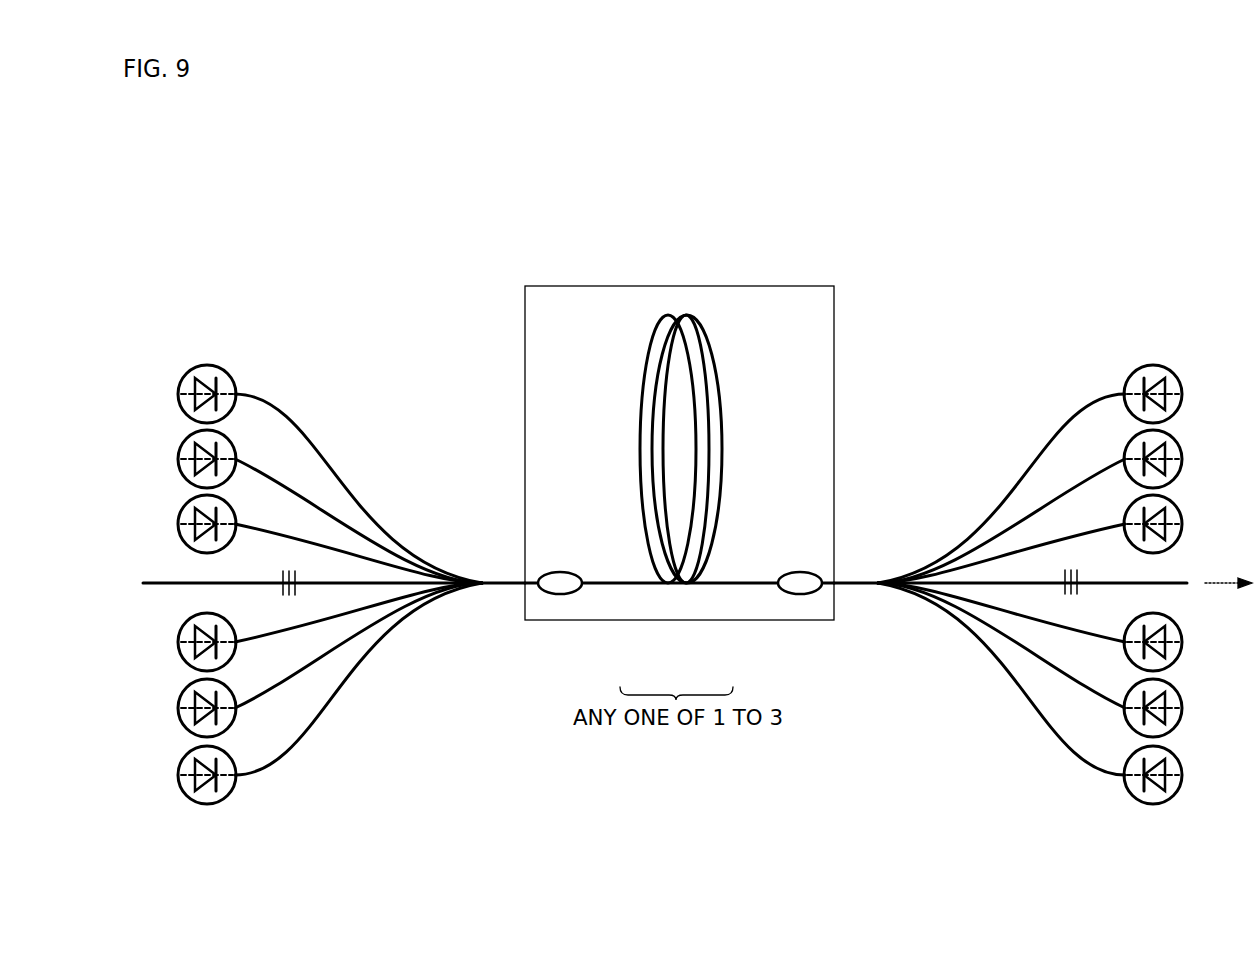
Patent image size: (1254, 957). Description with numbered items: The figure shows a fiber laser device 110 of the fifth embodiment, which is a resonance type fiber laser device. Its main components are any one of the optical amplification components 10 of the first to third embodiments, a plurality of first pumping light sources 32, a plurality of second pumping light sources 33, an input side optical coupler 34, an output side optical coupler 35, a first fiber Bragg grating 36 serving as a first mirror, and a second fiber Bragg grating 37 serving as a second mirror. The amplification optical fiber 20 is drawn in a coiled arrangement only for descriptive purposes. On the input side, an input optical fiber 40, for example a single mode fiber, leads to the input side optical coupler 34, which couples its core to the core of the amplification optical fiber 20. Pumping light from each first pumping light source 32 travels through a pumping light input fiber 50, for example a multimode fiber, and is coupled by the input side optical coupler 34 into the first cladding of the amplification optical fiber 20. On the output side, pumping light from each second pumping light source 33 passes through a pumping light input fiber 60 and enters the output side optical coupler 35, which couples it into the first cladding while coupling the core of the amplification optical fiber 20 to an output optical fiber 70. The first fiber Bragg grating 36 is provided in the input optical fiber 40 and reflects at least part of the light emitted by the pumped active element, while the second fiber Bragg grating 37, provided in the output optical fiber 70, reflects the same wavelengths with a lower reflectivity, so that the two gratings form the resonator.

The fiber laser device 110 is at (1079, 205).
The optical amplification component 10 is at (646, 621).
The amplification optical fiber 20 is at (722, 586).
The first pumping light source 32 is at (180, 385).
The second pumping light source 33 is at (1180, 385).
The input side optical coupler 34 is at (562, 569).
The output side optical coupler 35 is at (802, 569).
The first fiber Bragg grating 36 is at (281, 578).
The second fiber Bragg grating 37 is at (1080, 578).
The input optical fiber 40 is at (378, 581).
The pumping light input fiber 50 is at (293, 423).
The pumping light input fiber 60 is at (1068, 428).
The output optical fiber 70 is at (982, 581).